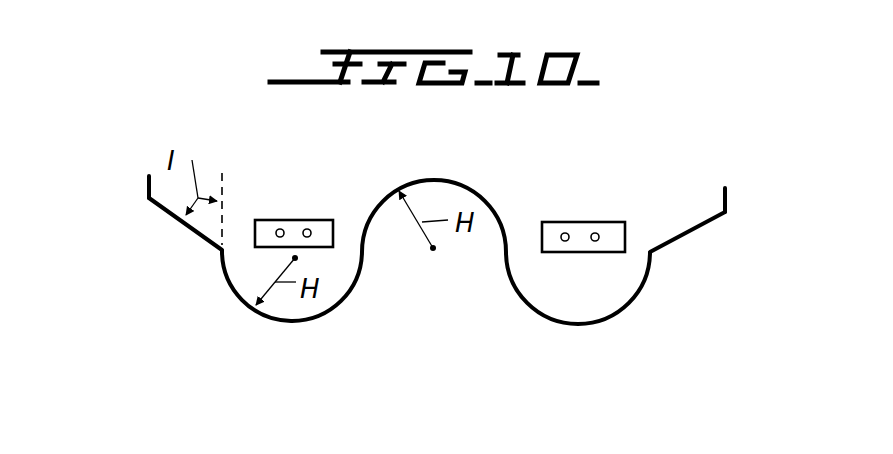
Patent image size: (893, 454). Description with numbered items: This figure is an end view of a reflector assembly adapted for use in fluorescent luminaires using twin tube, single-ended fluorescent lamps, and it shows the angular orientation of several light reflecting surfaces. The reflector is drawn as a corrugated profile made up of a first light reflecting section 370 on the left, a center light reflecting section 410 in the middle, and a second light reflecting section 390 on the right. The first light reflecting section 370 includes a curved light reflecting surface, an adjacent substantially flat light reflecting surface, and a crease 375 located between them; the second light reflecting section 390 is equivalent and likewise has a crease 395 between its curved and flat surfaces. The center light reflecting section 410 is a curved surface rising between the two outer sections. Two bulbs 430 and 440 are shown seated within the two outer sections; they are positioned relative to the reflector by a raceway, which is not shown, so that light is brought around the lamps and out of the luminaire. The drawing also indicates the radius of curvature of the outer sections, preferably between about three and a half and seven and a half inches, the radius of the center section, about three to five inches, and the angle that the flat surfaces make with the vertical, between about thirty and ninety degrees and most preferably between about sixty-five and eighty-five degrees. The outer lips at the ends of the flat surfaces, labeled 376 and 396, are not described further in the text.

The first light reflecting section 370 is at (288, 322).
The crease 375 is at (215, 253).
The left end lip 376 is at (147, 182).
The second light reflecting section 390 is at (565, 325).
The crease 395 is at (657, 258).
The right end lip 396 is at (728, 205).
The center light reflecting section 410 is at (473, 157).
The bulb 430 is at (317, 195).
The bulb 440 is at (600, 202).